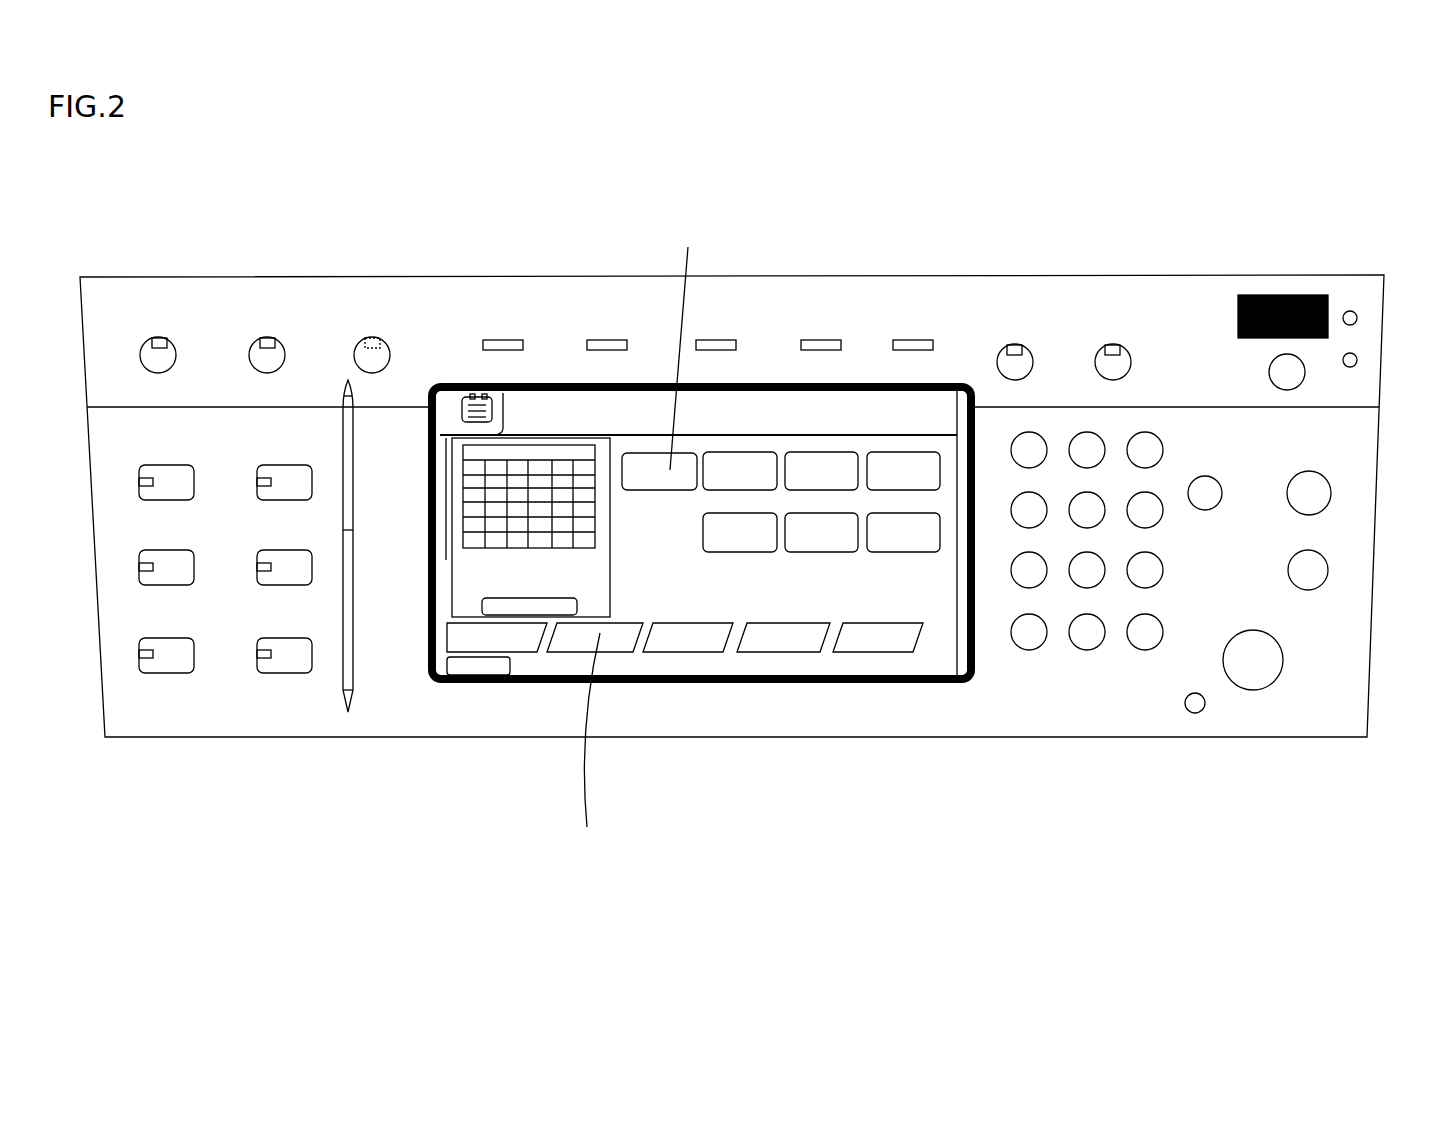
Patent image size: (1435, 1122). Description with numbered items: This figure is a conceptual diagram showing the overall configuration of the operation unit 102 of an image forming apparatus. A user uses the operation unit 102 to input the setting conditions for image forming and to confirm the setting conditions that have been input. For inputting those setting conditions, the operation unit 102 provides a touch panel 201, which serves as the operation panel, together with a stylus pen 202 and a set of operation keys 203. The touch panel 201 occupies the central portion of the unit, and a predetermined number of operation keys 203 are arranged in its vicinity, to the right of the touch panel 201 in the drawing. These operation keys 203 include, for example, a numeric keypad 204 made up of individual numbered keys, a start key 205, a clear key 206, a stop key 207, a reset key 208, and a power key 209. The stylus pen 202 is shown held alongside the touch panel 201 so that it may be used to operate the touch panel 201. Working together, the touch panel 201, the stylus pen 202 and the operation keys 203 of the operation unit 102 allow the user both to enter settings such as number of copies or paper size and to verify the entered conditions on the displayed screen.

The operation unit 102 is at (745, 745).
The touch panel 201 is at (545, 720).
The stylus pen 202 is at (348, 712).
The operation keys 203 is at (992, 757).
The numeric keypad 204 is at (1082, 676).
The start key 205 is at (1253, 670).
The clear key 206 is at (1198, 512).
The stop key 207 is at (1310, 580).
The reset key 208 is at (1312, 502).
The power key 209 is at (1297, 382).